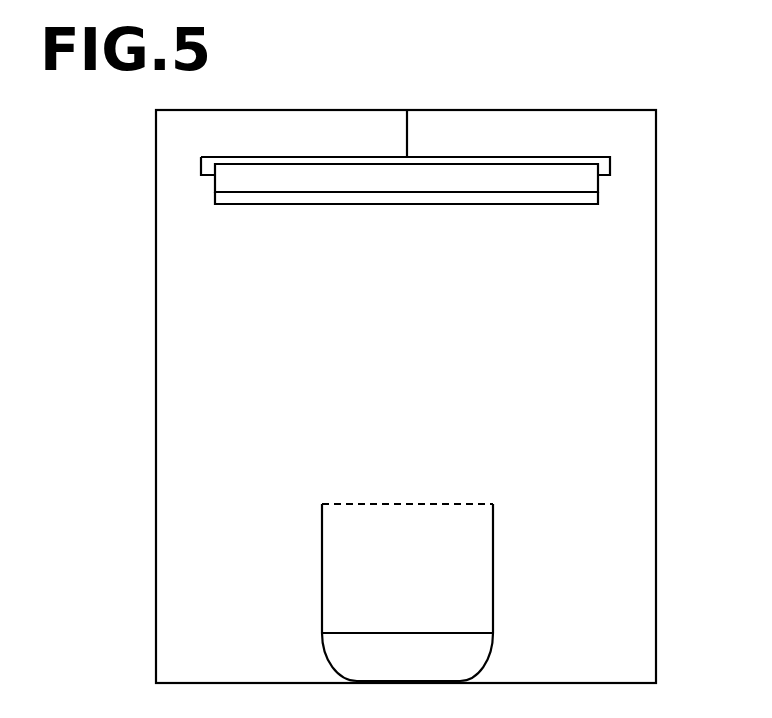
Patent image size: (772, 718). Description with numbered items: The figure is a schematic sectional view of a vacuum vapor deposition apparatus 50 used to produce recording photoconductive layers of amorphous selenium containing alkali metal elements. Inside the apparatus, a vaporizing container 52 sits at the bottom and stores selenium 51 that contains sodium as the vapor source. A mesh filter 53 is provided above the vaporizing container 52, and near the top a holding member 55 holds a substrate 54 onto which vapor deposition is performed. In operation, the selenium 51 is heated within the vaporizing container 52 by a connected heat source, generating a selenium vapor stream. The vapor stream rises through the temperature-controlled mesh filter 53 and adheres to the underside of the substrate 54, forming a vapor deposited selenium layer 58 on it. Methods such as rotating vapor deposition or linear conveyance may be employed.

The vacuum vapor deposition apparatus 50 is at (657, 152).
The selenium 51 is at (483, 647).
The vaporizing container 52 is at (494, 598).
The mesh filter 53 is at (408, 503).
The substrate 54 is at (590, 183).
The holding member 55 is at (556, 157).
The vapor deposited selenium layer 58 is at (566, 198).